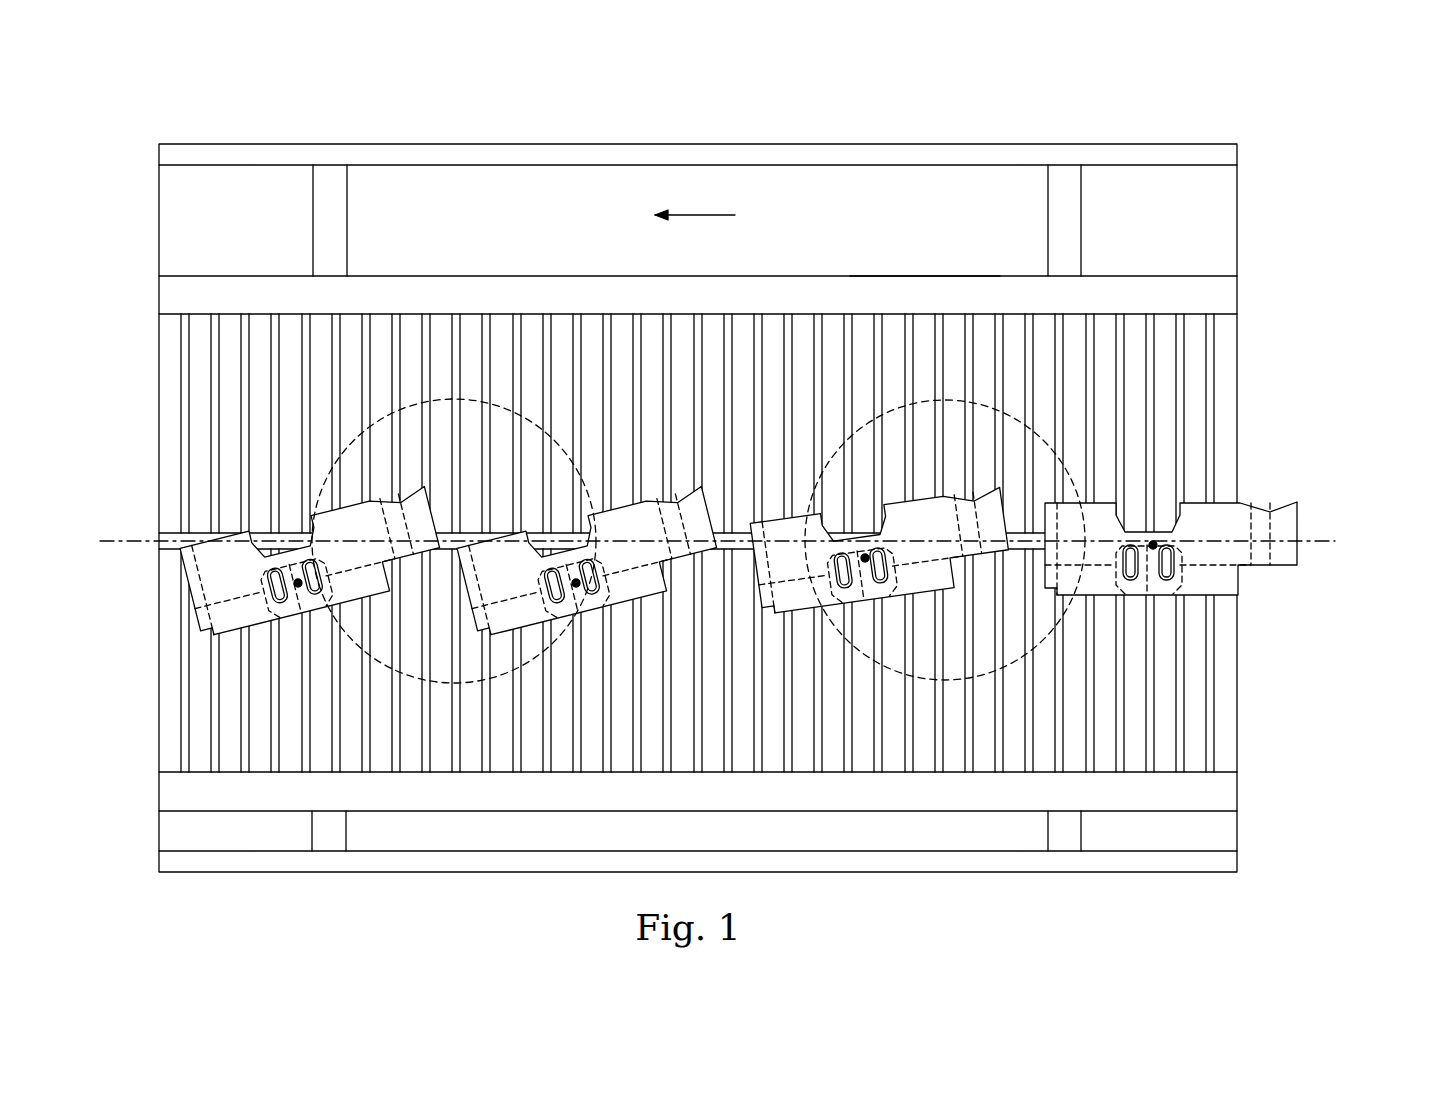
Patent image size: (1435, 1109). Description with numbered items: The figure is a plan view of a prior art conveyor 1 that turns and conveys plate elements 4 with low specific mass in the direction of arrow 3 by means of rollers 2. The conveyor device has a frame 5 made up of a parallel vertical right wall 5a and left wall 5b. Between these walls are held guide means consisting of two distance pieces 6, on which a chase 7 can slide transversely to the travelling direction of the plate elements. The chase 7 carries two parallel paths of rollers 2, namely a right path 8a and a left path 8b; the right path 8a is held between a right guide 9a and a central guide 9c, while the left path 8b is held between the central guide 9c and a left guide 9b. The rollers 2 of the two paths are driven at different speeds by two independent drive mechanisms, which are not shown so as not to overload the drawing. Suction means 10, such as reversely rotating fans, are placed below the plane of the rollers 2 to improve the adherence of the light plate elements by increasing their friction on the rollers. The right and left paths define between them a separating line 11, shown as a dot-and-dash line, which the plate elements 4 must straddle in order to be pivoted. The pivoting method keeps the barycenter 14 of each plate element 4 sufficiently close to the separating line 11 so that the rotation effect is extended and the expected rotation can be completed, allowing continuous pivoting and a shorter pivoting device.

The conveyor 1 is at (1320, 170).
The rollers 2 is at (740, 543).
The arrow 3 is at (698, 215).
The plate elements 4 is at (239, 589).
The frame 5 is at (646, 170).
The right wall 5a is at (170, 160).
The left wall 5b is at (172, 862).
The distance pieces 6 is at (318, 217).
The chase 7 is at (910, 260).
The right path 8a is at (1258, 406).
The left path 8b is at (1258, 663).
The right guide 9a is at (170, 305).
The left guide 9b is at (170, 803).
The central guide 9c is at (165, 525).
The suction means 10 is at (498, 403).
The separating line 11 is at (1322, 542).
The barycenter 14 is at (298, 583).